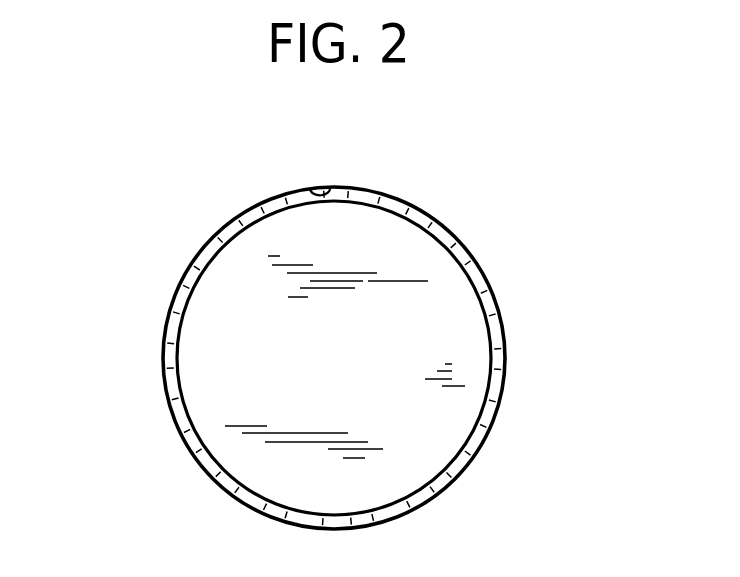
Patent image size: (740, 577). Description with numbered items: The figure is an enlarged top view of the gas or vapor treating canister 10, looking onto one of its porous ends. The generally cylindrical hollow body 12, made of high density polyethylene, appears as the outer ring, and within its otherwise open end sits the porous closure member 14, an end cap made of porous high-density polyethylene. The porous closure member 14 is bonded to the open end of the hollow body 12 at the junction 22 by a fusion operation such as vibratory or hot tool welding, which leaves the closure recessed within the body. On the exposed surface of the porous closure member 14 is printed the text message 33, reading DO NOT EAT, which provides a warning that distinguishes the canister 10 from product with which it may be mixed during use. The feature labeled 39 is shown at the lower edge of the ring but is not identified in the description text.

The gas or vapor treating canister 10 is at (150, 319).
The hollow body 12 is at (452, 234).
The porous closure member 14 is at (443, 445).
The junction 22 is at (326, 186).
The text message 33 is at (422, 346).
The grip ribs 39 is at (275, 519).